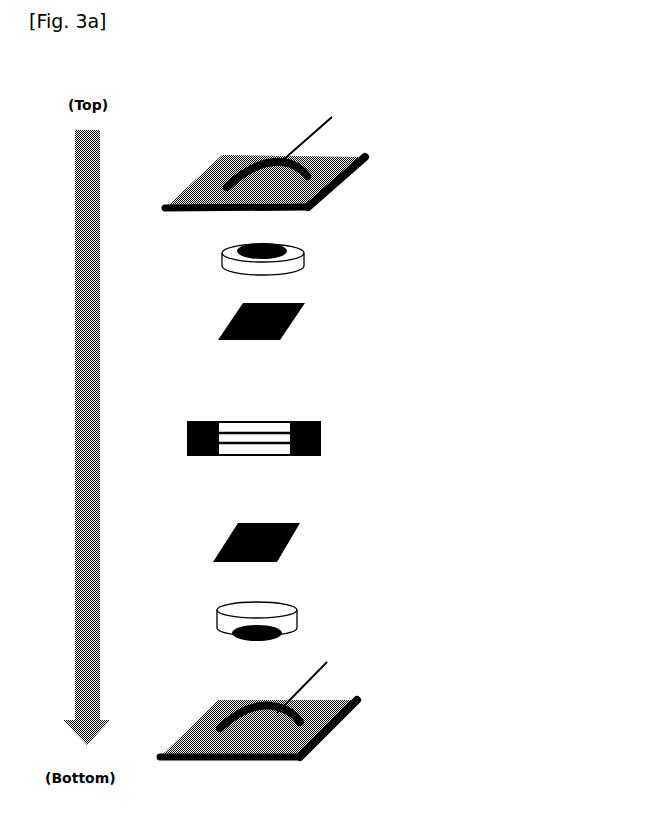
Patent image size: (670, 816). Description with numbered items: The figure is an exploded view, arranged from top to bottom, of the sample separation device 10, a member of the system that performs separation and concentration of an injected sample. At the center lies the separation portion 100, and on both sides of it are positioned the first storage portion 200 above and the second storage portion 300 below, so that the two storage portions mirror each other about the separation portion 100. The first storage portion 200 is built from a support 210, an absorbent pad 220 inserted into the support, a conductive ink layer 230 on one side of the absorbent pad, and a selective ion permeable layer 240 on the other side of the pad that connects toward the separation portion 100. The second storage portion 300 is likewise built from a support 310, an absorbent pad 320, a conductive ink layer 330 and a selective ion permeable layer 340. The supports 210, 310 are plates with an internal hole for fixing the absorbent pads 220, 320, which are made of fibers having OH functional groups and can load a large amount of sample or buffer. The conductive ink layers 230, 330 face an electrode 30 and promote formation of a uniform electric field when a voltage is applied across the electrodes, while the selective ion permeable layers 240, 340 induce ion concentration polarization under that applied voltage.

The sample separation device 10 is at (636, 97).
The electrode 30 is at (318, 135).
The separation portion 100 is at (510, 414).
The first storage portion 200 is at (510, 101).
The support 210 is at (323, 178).
The absorbent pad 220 is at (283, 260).
The conductive ink layer 230 is at (283, 246).
The selective ion permeable layer 240 is at (283, 322).
The second storage portion 300 is at (510, 532).
The support 310 is at (320, 726).
The absorbent pad 320 is at (278, 622).
The conductive ink layer 330 is at (281, 640).
The selective ion permeable layer 340 is at (278, 542).